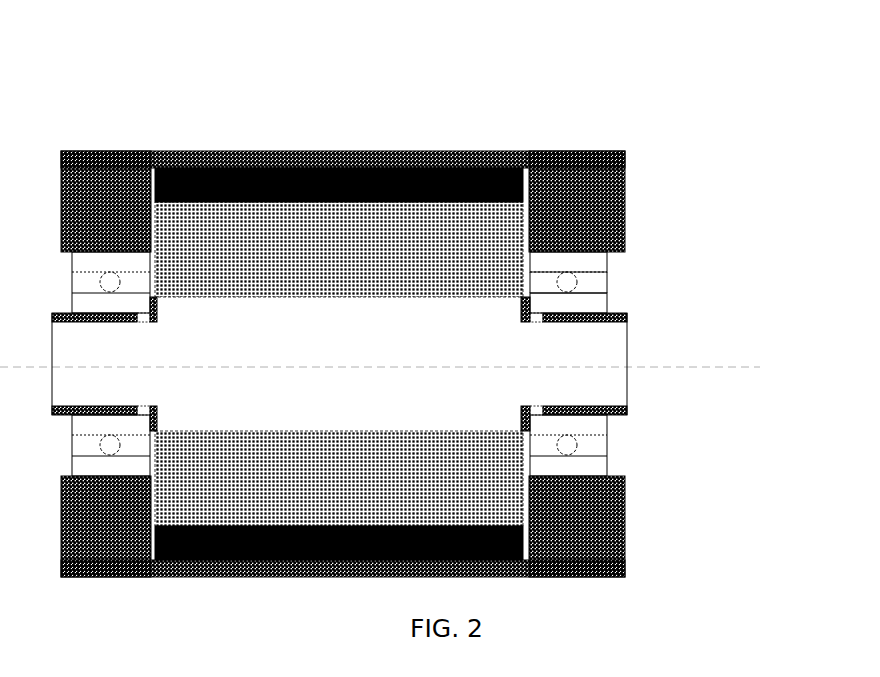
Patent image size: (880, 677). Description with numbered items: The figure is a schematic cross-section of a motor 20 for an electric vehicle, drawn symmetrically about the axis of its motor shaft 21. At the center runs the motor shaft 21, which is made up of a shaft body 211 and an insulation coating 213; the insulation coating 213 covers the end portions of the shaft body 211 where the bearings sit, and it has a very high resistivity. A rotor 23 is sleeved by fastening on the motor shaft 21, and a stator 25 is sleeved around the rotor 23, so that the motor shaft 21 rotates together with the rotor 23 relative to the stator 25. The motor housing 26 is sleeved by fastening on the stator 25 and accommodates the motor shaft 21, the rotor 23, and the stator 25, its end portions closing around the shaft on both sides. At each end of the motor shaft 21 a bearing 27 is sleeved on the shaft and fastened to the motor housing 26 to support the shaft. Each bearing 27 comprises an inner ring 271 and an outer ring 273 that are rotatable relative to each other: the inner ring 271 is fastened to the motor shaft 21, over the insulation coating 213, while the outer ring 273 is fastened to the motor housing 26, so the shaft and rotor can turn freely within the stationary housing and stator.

The motor 20 is at (356, 33).
The motor shaft 21 is at (763, 337).
The shaft body 211 is at (612, 337).
The insulation coating 213 is at (625, 322).
The rotor 23 is at (472, 212).
The stator 25 is at (282, 151).
The motor housing 26 is at (610, 222).
The bearing 27 is at (728, 307).
The inner ring 271 is at (607, 297).
The outer ring 273 is at (607, 263).